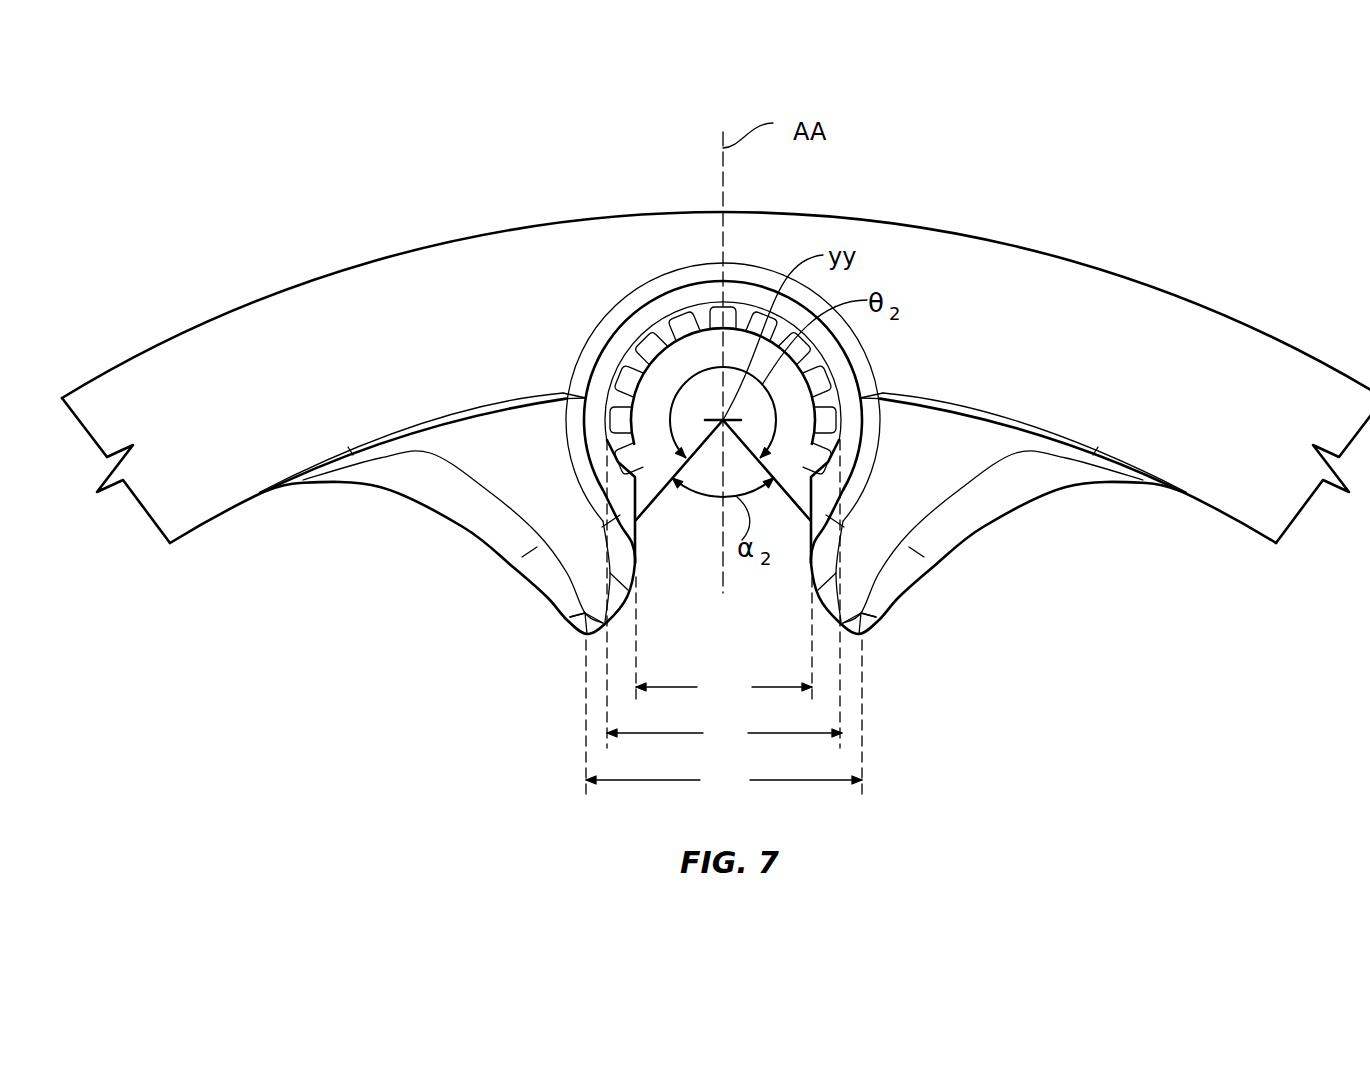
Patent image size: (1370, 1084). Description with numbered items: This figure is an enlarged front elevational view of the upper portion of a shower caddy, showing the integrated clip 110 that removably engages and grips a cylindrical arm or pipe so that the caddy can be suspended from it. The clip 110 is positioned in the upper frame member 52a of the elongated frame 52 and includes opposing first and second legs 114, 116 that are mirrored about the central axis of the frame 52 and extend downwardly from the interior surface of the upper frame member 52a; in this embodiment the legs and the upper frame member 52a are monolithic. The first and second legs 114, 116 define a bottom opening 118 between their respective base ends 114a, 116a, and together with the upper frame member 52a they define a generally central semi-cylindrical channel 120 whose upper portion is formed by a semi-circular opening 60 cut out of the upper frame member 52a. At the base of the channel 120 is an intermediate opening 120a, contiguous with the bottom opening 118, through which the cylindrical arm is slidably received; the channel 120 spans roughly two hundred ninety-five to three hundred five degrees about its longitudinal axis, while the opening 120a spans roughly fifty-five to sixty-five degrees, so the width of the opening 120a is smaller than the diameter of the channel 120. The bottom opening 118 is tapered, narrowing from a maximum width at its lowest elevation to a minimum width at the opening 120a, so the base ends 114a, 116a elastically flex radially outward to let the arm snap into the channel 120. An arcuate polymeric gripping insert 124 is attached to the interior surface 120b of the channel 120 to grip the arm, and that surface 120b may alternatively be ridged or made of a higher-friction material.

The elongated frame 52 is at (1240, 337).
The upper frame member 52a is at (1090, 277).
The semi-circular opening 60 is at (600, 355).
The integrated clip 110 is at (543, 697).
The first leg 114 is at (521, 477).
The base end of first leg 114a is at (585, 588).
The second leg 116 is at (968, 465).
The base end of second leg 116a is at (861, 588).
The bottom opening 118 is at (755, 617).
The semi-cylindrical channel 120 is at (697, 348).
The opening of the channel 120a is at (665, 549).
The surface 120b is at (642, 342).
The arcuate polymeric gripping insert 124 is at (607, 418).